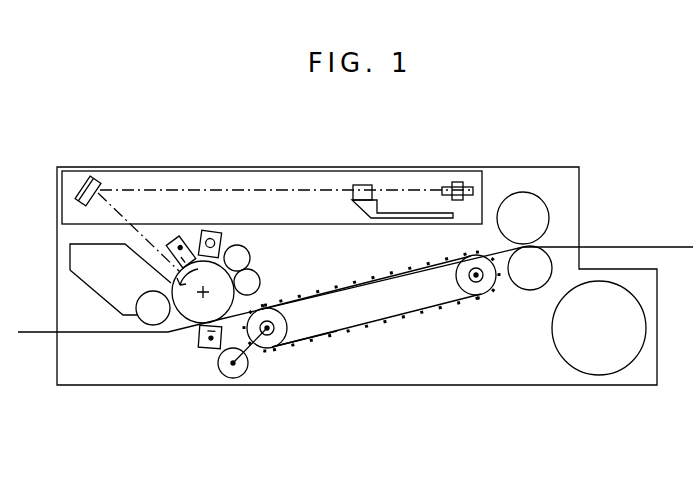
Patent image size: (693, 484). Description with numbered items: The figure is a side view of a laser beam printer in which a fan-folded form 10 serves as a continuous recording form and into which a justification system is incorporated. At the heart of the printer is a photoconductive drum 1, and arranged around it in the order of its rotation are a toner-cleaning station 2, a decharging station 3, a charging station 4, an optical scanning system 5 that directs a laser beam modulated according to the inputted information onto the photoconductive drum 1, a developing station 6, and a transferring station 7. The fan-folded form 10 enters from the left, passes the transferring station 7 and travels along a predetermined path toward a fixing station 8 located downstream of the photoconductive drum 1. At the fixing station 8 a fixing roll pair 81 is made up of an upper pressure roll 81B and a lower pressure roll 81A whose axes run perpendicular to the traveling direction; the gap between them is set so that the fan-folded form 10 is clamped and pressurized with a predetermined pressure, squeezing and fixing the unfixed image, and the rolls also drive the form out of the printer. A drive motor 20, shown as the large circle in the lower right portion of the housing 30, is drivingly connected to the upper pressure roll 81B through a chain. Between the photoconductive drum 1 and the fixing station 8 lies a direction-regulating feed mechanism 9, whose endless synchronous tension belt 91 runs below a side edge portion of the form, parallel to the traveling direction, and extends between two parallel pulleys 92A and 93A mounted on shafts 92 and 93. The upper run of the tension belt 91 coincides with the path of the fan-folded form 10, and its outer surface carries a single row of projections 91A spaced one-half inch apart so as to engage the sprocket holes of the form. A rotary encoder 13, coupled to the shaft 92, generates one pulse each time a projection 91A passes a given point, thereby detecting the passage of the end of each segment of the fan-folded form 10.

The photoconductive drum 1 is at (182, 325).
The toner-cleaning station 2 is at (249, 270).
The decharging station 3 is at (208, 228).
The charging station 4 is at (176, 236).
The optical scanning system 5 is at (131, 177).
The developing station 6 is at (88, 273).
The transferring station 7 is at (213, 349).
The fixing station 8 is at (587, 201).
The direction-regulating feed mechanism 9 is at (359, 352).
The fan-folded form 10 is at (33, 336).
The rotary encoder 13 is at (228, 378).
The drive motor 20 is at (597, 364).
The housing frame 30 is at (532, 386).
The fixing roll pair 81 is at (587, 239).
The pressure roll 81A is at (534, 213).
The upper pressure roll 81B is at (530, 260).
The tension belt 91 is at (337, 335).
The projections 91A is at (382, 322).
The shaft 92 is at (283, 343).
The pulley 92A is at (265, 346).
The shaft 93 is at (487, 294).
The pulley 93A is at (442, 345).